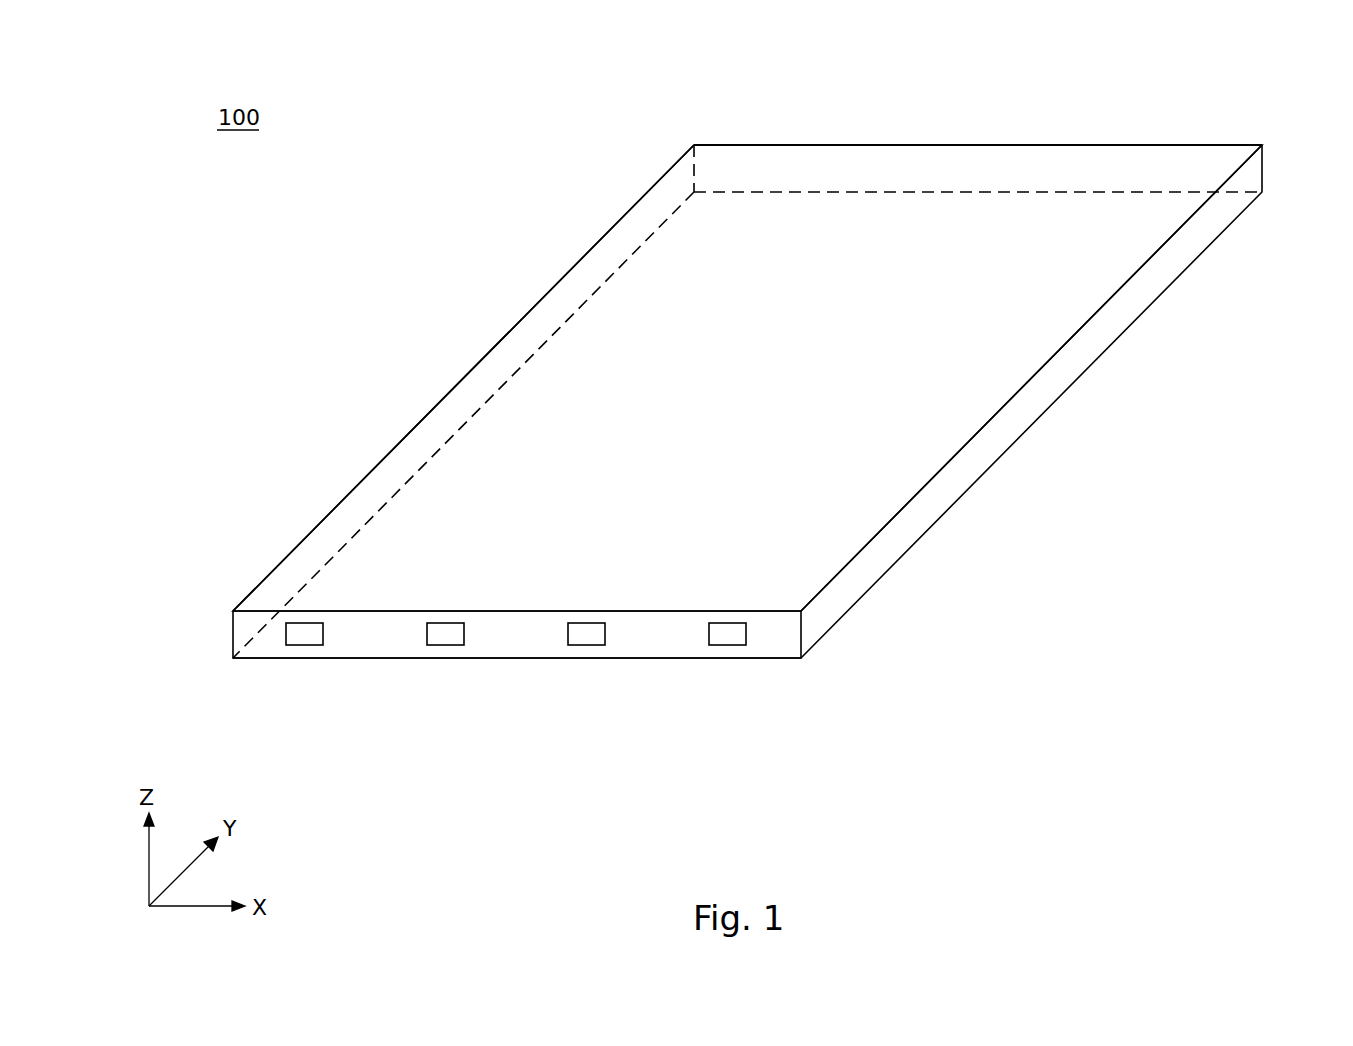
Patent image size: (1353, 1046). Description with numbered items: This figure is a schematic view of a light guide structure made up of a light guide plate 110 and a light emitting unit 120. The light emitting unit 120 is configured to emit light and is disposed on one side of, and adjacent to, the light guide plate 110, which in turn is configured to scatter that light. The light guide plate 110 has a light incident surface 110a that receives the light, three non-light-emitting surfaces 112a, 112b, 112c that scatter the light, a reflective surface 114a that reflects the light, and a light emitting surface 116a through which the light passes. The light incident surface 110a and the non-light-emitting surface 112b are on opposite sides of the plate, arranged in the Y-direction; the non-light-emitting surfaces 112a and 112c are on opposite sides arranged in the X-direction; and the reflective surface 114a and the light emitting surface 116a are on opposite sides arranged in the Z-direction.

The light guide plate 110 is at (1008, 518).
The light incident surface 110a is at (513, 632).
The non-light-emitting surface 112a is at (373, 492).
The non-light-emitting surface 112b is at (937, 170).
The non-light-emitting surface 112c is at (1072, 365).
The reflective surface 114a is at (665, 660).
The light emitting surface 116a is at (843, 267).
The light emitting unit 120 is at (302, 632).